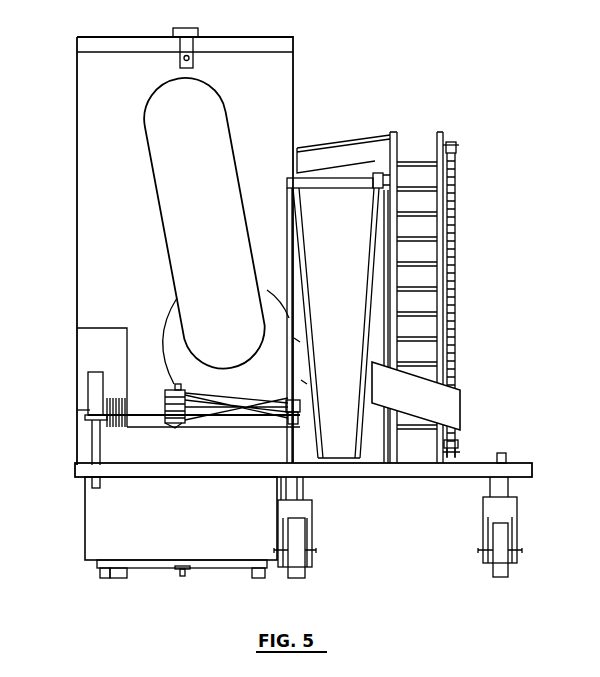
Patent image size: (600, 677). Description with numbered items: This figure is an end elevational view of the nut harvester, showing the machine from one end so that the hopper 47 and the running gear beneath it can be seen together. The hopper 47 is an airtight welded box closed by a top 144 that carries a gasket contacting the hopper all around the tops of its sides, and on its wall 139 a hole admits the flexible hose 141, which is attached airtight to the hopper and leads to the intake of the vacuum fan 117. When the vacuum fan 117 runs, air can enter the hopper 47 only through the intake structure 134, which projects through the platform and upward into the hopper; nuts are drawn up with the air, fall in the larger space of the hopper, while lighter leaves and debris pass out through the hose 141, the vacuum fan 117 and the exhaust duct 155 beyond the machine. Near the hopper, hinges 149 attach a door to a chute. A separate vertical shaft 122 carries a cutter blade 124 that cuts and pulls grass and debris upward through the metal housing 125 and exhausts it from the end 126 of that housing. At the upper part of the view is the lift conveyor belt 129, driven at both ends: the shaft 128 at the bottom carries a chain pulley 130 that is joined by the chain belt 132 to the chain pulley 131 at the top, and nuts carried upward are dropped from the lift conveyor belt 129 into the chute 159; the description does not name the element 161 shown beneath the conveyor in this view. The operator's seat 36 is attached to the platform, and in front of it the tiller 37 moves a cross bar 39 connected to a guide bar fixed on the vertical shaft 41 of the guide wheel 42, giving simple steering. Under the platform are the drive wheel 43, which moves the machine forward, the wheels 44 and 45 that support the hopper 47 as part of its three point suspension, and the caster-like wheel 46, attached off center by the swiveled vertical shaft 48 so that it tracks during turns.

The top 144 is at (130, 43).
The hinges 149 is at (192, 43).
The wall 139 is at (100, 128).
The hopper 47 is at (77, 194).
The flexible hose 141 is at (205, 132).
The vacuum fan 117 is at (177, 320).
The operator's seat 36 is at (83, 388).
The tiller 37 is at (96, 375).
The cross bar 39 is at (128, 417).
The vertical shaft 41 is at (296, 423).
The metal housing 125 is at (82, 450).
The end 126 is at (208, 452).
The hopper 161 is at (345, 448).
The chute 159 is at (325, 160).
The lift conveyor belt 129 is at (418, 150).
The chain pulley 131 is at (456, 144).
The chain belt 132 is at (456, 300).
The exhaust duct 155 is at (461, 409).
The shaft 128 is at (458, 444).
The chain pulley 130 is at (460, 452).
The swiveled vertical shaft 48 is at (506, 458).
The guide wheel 42 is at (300, 540).
The wheel 46 is at (500, 578).
The wheel 45 is at (101, 579).
The drive wheel 43 is at (121, 579).
The wheel 44 is at (260, 579).
The cutter blade 124 is at (178, 569).
The vertical shaft 122 is at (183, 577).
The intake structure 134 is at (247, 565).